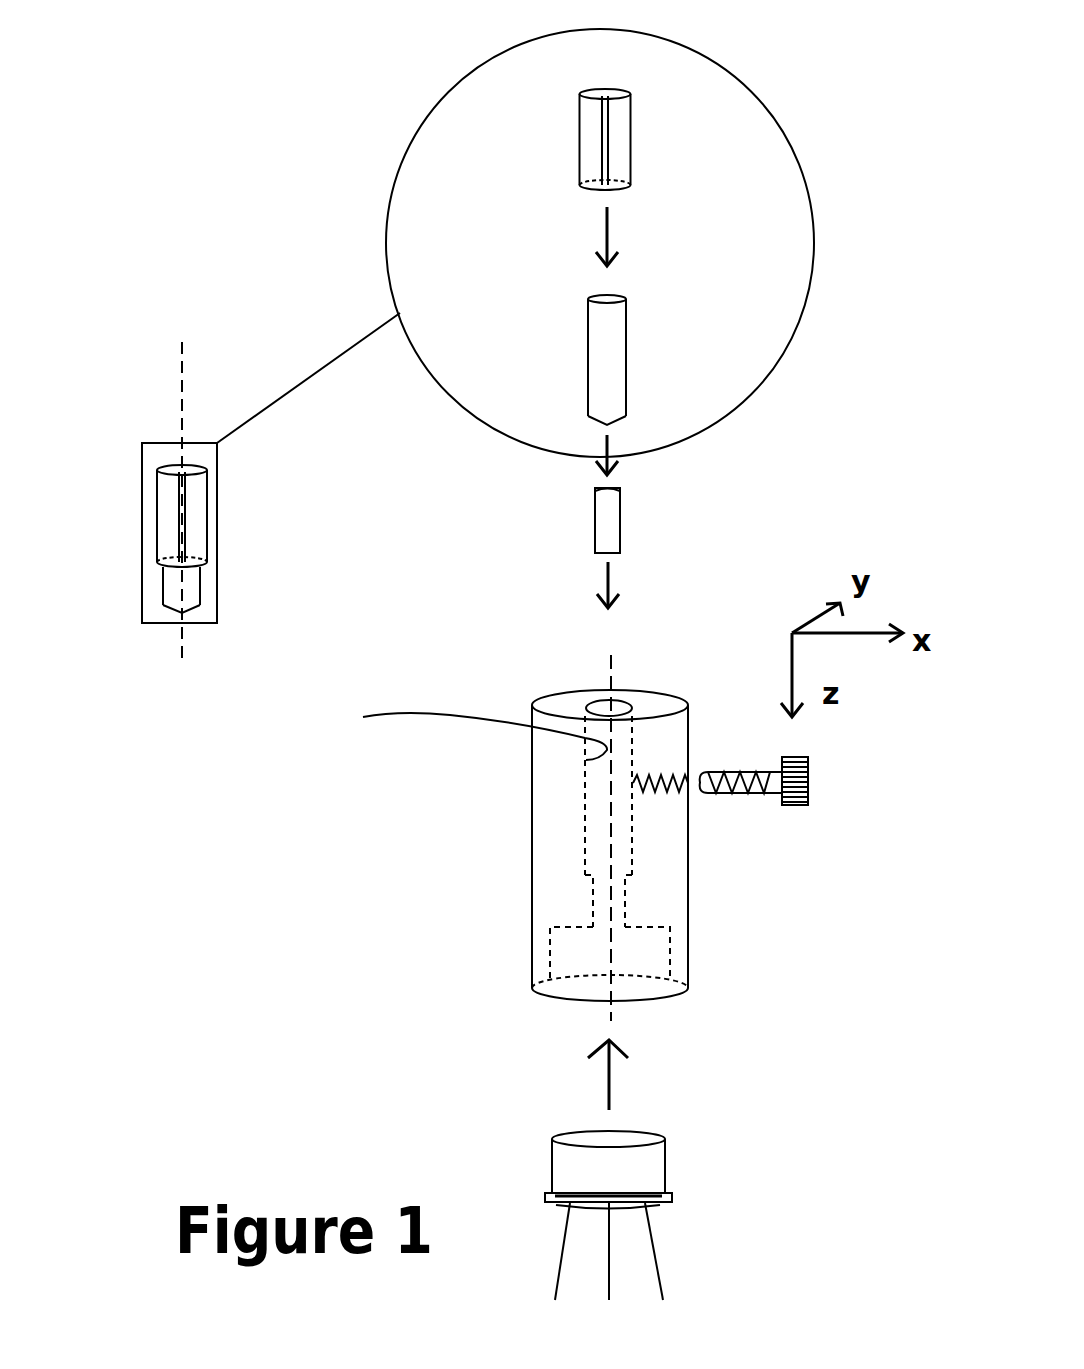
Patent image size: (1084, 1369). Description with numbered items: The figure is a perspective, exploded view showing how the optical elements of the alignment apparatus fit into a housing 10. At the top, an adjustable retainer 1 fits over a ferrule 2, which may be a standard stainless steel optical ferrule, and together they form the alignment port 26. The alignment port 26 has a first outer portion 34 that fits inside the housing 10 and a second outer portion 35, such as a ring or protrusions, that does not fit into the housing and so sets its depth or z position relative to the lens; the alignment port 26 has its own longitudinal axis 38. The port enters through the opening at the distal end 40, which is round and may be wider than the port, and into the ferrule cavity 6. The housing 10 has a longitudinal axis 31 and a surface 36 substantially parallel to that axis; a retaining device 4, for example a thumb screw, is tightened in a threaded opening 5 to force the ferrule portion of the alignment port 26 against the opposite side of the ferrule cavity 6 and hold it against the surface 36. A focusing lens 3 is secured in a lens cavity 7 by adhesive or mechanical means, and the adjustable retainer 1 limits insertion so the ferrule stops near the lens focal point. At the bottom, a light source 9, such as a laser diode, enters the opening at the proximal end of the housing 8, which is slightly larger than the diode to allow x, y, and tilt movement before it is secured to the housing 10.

The adjustable retainer 1 is at (639, 145).
The ferrule 2 is at (640, 335).
The focusing lens 3 is at (637, 508).
The retaining device 4 is at (818, 783).
The threaded opening 5 is at (631, 782).
The ferrule cavity 6 is at (640, 846).
The lens cavity 7 is at (628, 901).
The opening at the proximal end of the housing 8 is at (672, 957).
The light source 9 is at (677, 1155).
The housing 10 is at (522, 899).
The alignment port 26 is at (225, 537).
The longitudinal axis of the housing 31 is at (611, 656).
The first outer portion 34 is at (173, 587).
The second outer portion 35 is at (163, 523).
The surface 36 is at (458, 729).
The longitudinal axis of the alignment port 38 is at (182, 342).
The opening at the distal end 40 is at (625, 703).